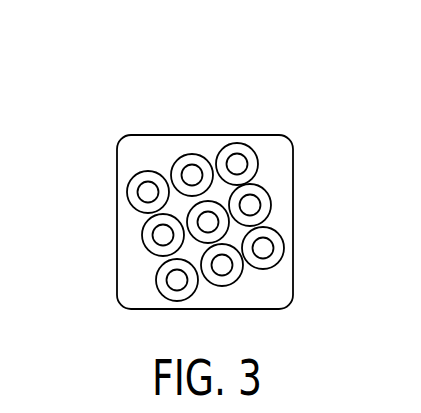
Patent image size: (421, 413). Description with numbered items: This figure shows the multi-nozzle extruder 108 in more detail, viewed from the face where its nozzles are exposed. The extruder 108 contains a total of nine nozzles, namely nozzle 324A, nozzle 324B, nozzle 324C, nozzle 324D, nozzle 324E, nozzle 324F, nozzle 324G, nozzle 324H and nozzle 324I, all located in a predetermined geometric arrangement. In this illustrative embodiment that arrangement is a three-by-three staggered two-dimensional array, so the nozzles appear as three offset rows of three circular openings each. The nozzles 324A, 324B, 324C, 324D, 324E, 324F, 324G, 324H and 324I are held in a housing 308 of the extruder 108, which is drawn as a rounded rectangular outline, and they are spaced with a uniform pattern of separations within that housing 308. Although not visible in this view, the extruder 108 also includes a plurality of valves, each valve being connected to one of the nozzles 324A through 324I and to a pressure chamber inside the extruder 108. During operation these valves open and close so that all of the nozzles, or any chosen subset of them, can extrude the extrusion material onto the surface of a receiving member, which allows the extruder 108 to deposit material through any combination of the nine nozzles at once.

The multi-nozzle extruder 108 is at (94, 96).
The housing 308 is at (131, 136).
The nozzle 324A is at (235, 143).
The nozzle 324B is at (172, 168).
The nozzle 324C is at (128, 192).
The nozzle 324D is at (272, 199).
The nozzle 324E is at (227, 219).
The nozzle 324F is at (143, 235).
The nozzle 324G is at (276, 265).
The nozzle 324H is at (196, 268).
The nozzle 324I is at (157, 290).